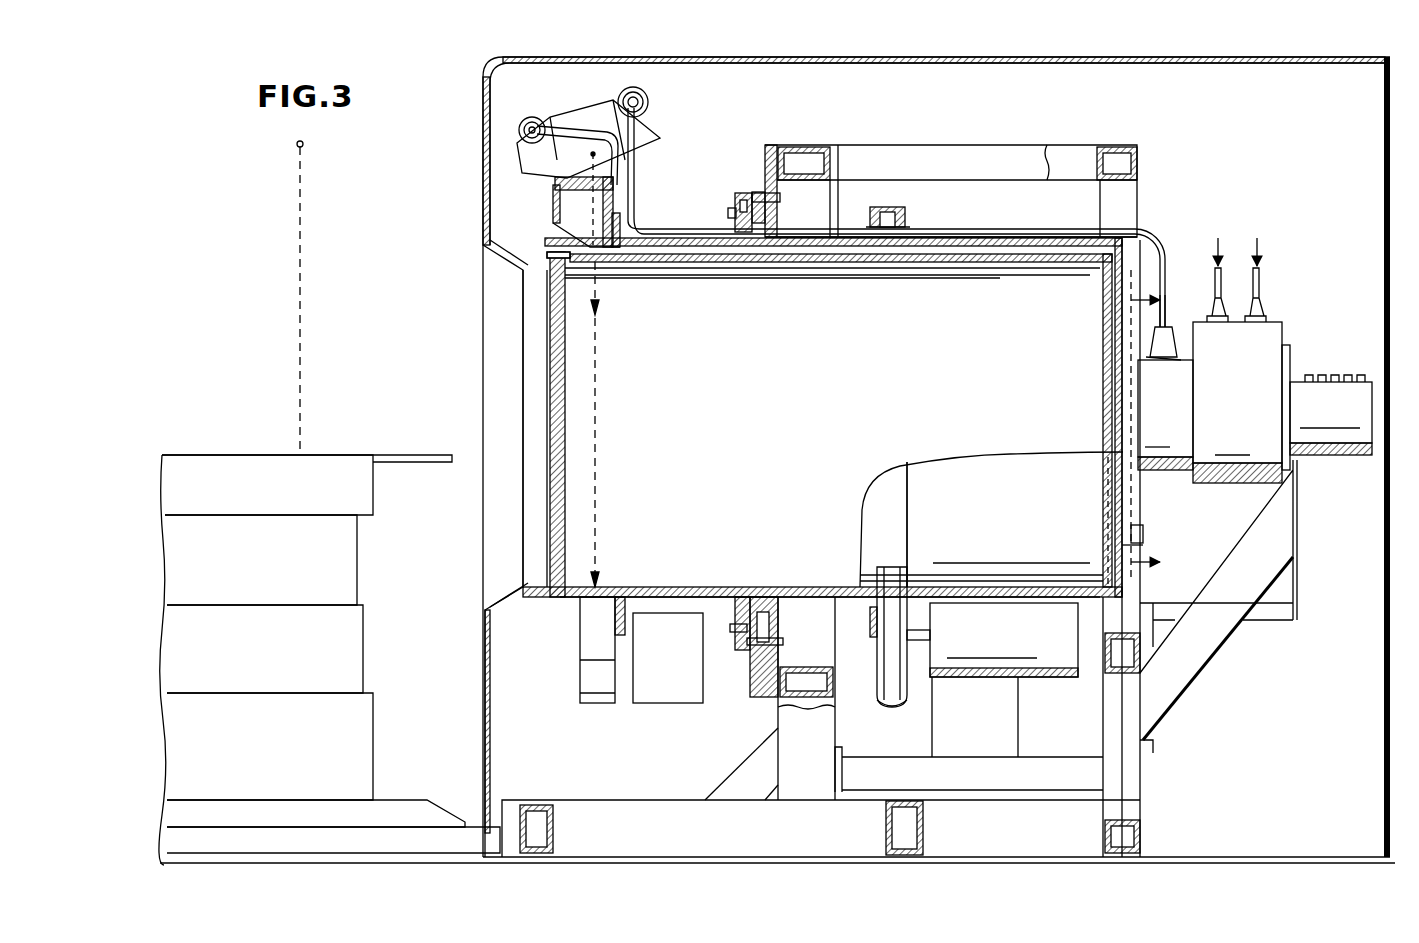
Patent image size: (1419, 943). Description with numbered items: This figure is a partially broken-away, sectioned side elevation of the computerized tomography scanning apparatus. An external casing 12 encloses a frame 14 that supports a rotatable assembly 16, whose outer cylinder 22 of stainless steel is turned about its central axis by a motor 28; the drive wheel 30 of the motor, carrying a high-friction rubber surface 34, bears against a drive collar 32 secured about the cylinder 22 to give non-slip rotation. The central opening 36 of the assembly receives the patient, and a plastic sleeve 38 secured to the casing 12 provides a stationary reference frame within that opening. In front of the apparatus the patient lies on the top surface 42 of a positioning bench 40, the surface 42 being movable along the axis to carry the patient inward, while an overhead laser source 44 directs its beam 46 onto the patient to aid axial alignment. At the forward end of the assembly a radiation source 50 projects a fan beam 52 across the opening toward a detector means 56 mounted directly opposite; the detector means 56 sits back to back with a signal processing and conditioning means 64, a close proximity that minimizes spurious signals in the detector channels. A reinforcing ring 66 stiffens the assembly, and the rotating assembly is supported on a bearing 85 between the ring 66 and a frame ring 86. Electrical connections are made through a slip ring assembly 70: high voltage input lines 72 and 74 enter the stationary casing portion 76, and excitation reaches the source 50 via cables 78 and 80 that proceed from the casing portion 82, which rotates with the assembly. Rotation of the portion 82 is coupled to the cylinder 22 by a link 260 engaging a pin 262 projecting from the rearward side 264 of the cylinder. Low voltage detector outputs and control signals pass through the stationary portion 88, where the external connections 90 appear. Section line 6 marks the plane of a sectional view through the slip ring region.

The external casing 12 is at (483, 100).
The frame 14 is at (1150, 778).
The rotatable assembly 16 is at (843, 225).
The outer cylinder 22 is at (1000, 240).
The motor 28 is at (1009, 645).
The drive wheel 30 is at (877, 650).
The drive collar 32 is at (900, 213).
The rubber surface 34 is at (887, 710).
The central opening 36 is at (505, 335).
The sleeve 38 is at (718, 587).
The positioning bench 40 is at (291, 665).
The top surface 42 is at (247, 455).
The laser source 44 is at (297, 146).
The beam 46 is at (300, 244).
The radiation source 50 is at (575, 120).
The fan beam 52 is at (597, 410).
The detector means 56 is at (580, 650).
The signal processing and conditioning means 64 is at (681, 675).
The reinforcing ring 66 is at (735, 205).
The slip ring assembly 70 is at (1270, 277).
The high voltage input line 72 is at (1212, 290).
The high voltage input line 74 is at (1263, 292).
The casing portion 76 is at (1254, 423).
The cable 78 is at (1148, 245).
The cable 80 is at (590, 125).
The casing portion 82 is at (1179, 423).
The bearing 85 is at (757, 195).
The frame ring 86 is at (765, 160).
The portion 88 is at (1344, 423).
The external connections 90 is at (1330, 378).
The link 260 is at (1143, 530).
The pin 262 is at (1143, 545).
The rearward side 264 is at (1125, 275).
The section line 6 is at (1146, 437).